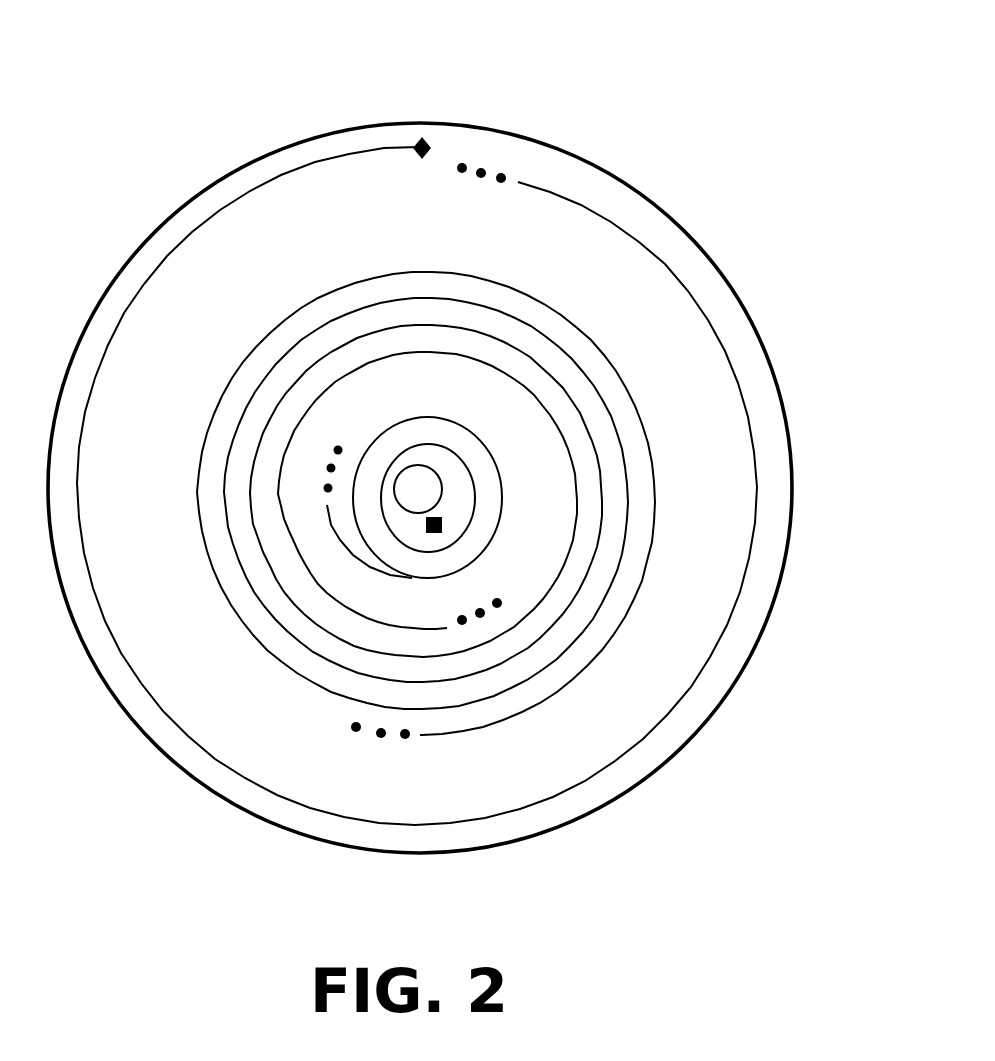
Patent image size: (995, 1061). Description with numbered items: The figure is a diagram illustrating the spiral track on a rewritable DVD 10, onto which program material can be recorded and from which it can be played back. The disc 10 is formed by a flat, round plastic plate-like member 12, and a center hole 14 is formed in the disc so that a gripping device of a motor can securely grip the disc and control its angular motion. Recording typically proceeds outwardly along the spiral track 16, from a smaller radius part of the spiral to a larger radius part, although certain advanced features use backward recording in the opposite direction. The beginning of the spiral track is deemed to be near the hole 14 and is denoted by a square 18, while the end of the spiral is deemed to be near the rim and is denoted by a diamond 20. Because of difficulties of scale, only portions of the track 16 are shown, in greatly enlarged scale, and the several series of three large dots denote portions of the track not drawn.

The rewritable DVD 10 is at (434, 31).
The plate-like member 12 is at (513, 133).
The center hole 14 is at (440, 502).
The spiral track 16 is at (487, 450).
The square 18 is at (442, 528).
The diamond 20 is at (418, 143).